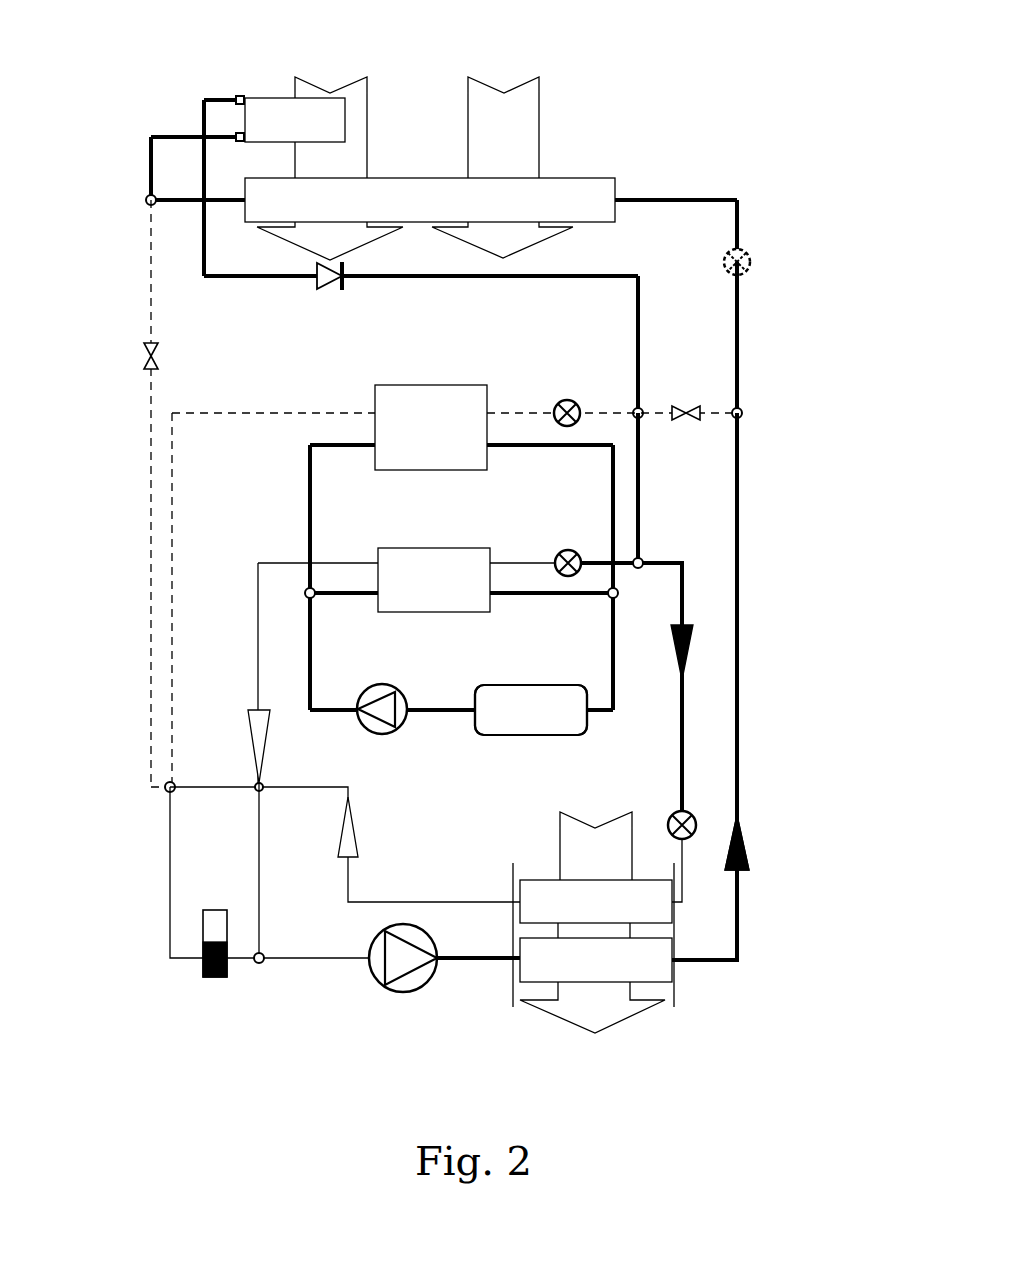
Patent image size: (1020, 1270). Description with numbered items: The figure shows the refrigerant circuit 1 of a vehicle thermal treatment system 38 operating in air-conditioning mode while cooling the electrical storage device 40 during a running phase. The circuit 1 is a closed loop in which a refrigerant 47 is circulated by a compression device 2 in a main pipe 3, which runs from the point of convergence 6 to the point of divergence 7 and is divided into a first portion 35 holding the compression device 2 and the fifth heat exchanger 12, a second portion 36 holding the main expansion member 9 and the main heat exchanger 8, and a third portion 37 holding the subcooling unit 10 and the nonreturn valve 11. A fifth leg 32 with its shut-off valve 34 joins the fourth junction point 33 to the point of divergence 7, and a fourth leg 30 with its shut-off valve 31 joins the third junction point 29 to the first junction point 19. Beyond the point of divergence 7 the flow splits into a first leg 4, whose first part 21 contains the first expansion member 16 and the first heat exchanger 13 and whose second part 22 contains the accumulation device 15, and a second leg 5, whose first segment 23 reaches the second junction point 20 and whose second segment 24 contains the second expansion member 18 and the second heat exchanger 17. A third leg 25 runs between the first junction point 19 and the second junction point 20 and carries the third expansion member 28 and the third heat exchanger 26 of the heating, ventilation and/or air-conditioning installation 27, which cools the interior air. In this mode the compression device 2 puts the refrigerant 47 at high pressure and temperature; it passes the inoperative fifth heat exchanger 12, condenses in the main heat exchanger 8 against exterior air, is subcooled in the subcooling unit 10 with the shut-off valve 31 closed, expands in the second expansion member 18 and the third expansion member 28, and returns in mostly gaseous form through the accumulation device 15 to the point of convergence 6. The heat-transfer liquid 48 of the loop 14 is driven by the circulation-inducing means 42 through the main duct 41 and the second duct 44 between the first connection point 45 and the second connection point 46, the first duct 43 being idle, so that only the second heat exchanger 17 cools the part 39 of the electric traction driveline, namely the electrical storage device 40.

The circuit 1 is at (605, 128).
The compression device 2 is at (444, 958).
The main pipe 3 is at (640, 197).
The first leg 4 is at (222, 412).
The second leg 5 is at (256, 685).
The point of convergence 6 is at (259, 963).
The point of divergence 7 is at (636, 398).
The main heat exchanger 8 is at (430, 219).
The main expansion member 9 is at (752, 255).
The subcooling unit 10 is at (290, 119).
The nonreturn valve 11 is at (318, 268).
The fifth heat exchanger 12 is at (596, 952).
The first heat exchanger 13 is at (431, 427).
The loop for heat-transfer liquid 14 is at (307, 513).
The accumulation device 15 is at (205, 975).
The first expansion member 16 is at (560, 400).
The second heat exchanger 17 is at (434, 580).
The second expansion member 18 is at (588, 550).
The first junction point 19 is at (168, 790).
The second junction point 20 is at (642, 560).
The first part 21 is at (345, 412).
The second part 22 is at (170, 880).
The first segment 23 is at (640, 510).
The second segment 24 is at (258, 580).
The third leg 25 is at (348, 880).
The third heat exchanger 26 is at (596, 867).
The heating, ventilation and/or air-conditioning installation 27 is at (675, 1000).
The third expansion member 28 is at (665, 822).
The third junction point 29 is at (148, 196).
The fourth leg 30 is at (150, 305).
The shut-off valve 31 is at (147, 357).
The fifth leg 32 is at (712, 410).
The fourth junction point 33 is at (740, 412).
The shut-off valve 34 is at (672, 408).
The first portion 35 is at (737, 760).
The second portion 36 is at (710, 200).
The third portion 37 is at (165, 136).
The thermal treatment system 38 is at (775, 112).
The part of an electric traction driveline 39 is at (531, 710).
The electrical storage device 40 is at (531, 710).
The main duct 41 is at (465, 695).
The circulation-inducing means 42 is at (385, 690).
The first duct 43 is at (355, 447).
The second duct 44 is at (545, 597).
The first connection point 45 is at (308, 597).
The second connection point 46 is at (615, 597).
The refrigerant 47 is at (255, 730).
The heat-transfer liquid 48 is at (307, 513).